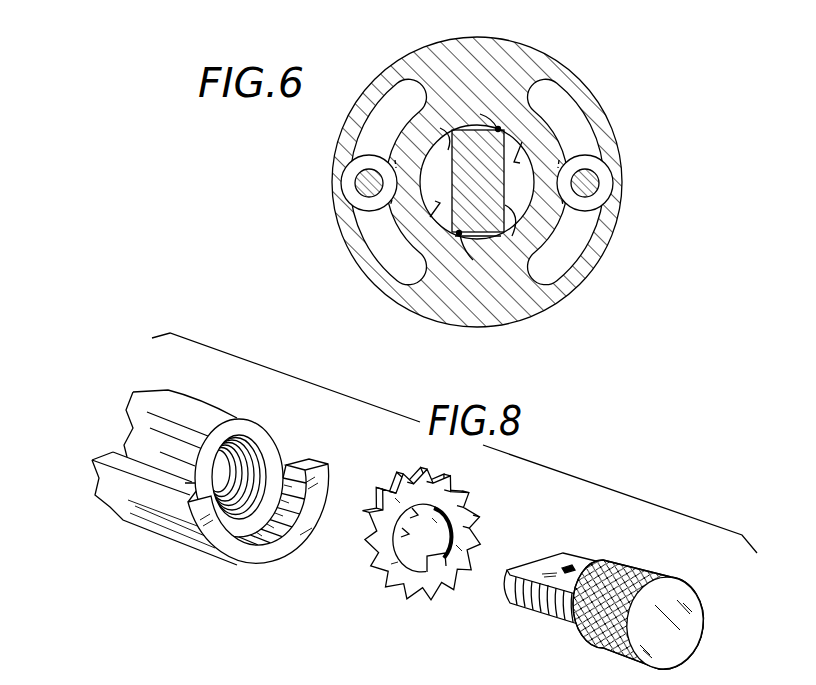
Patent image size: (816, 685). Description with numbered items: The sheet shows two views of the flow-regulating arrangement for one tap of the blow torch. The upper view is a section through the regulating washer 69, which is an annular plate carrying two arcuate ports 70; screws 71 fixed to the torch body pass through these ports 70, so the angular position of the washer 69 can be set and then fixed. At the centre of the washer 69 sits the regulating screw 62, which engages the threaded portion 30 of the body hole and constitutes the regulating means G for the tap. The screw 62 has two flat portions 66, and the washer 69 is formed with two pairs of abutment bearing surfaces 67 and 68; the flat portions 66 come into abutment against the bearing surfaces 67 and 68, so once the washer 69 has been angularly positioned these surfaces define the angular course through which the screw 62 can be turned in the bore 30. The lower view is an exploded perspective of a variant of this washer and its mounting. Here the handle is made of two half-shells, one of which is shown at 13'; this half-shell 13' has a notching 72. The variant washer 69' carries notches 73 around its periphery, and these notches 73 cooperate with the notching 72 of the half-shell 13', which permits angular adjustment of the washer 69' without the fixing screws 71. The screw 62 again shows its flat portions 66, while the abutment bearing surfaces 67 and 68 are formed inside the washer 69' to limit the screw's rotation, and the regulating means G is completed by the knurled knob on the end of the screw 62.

In FIG. 6, the regulating screw 62 is at (490, 192).
In FIG. 8, the regulating screw 62 is at (535, 610).
In FIG. 6, the flat portions 66 is at (477, 182).
In FIG. 8, the flat portions 66 is at (572, 569).
In FIG. 6, the bearing surfaces 67 is at (480, 178).
In FIG. 8, the bearing surfaces 67 is at (418, 507).
In FIG. 6, the bearing surfaces 68 is at (479, 185).
In FIG. 8, the bearing surfaces 68 is at (397, 530).
In FIG. 6, the regulating washer 69 is at (485, 182).
In FIG. 6, the ports 70 is at (365, 245).
In FIG. 6, the screws 71 is at (357, 183).
In FIG. 8, the half-shell of the handle 13' is at (187, 483).
In FIG. 8, the threaded portion 30 is at (253, 440).
In FIG. 8, the notching 72 is at (281, 553).
In FIG. 8, the notches 73 is at (373, 557).
In FIG. 8, the regulating washer (alternative embodiment) 69' is at (453, 534).
In FIG. 8, the regulating means G is at (650, 573).